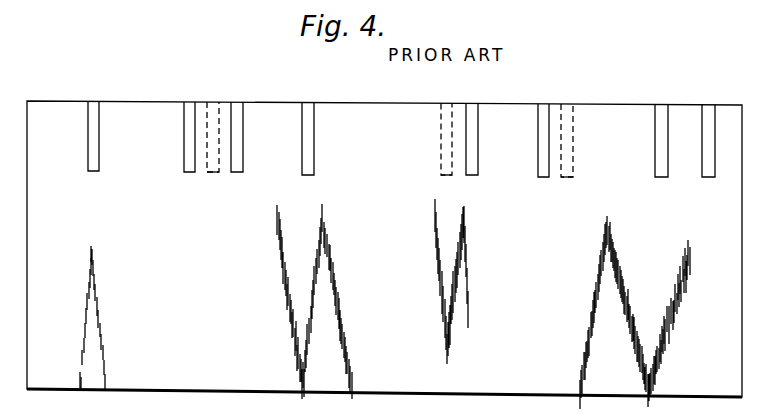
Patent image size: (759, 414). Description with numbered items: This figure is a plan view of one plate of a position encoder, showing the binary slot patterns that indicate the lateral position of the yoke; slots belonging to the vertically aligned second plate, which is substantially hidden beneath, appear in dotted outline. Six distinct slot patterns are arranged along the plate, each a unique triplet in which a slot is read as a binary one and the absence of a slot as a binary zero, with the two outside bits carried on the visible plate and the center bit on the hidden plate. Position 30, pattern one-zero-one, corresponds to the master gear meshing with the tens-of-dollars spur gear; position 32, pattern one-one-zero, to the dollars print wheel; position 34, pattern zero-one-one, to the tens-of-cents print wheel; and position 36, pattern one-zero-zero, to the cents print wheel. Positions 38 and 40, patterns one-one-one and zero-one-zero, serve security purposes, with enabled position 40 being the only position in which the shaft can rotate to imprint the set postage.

The position 30 is at (719, 97).
The position 32 is at (593, 97).
The position 34 is at (477, 97).
The position 36 is at (357, 97).
The position 38 is at (246, 97).
The enabled position 40 is at (118, 97).